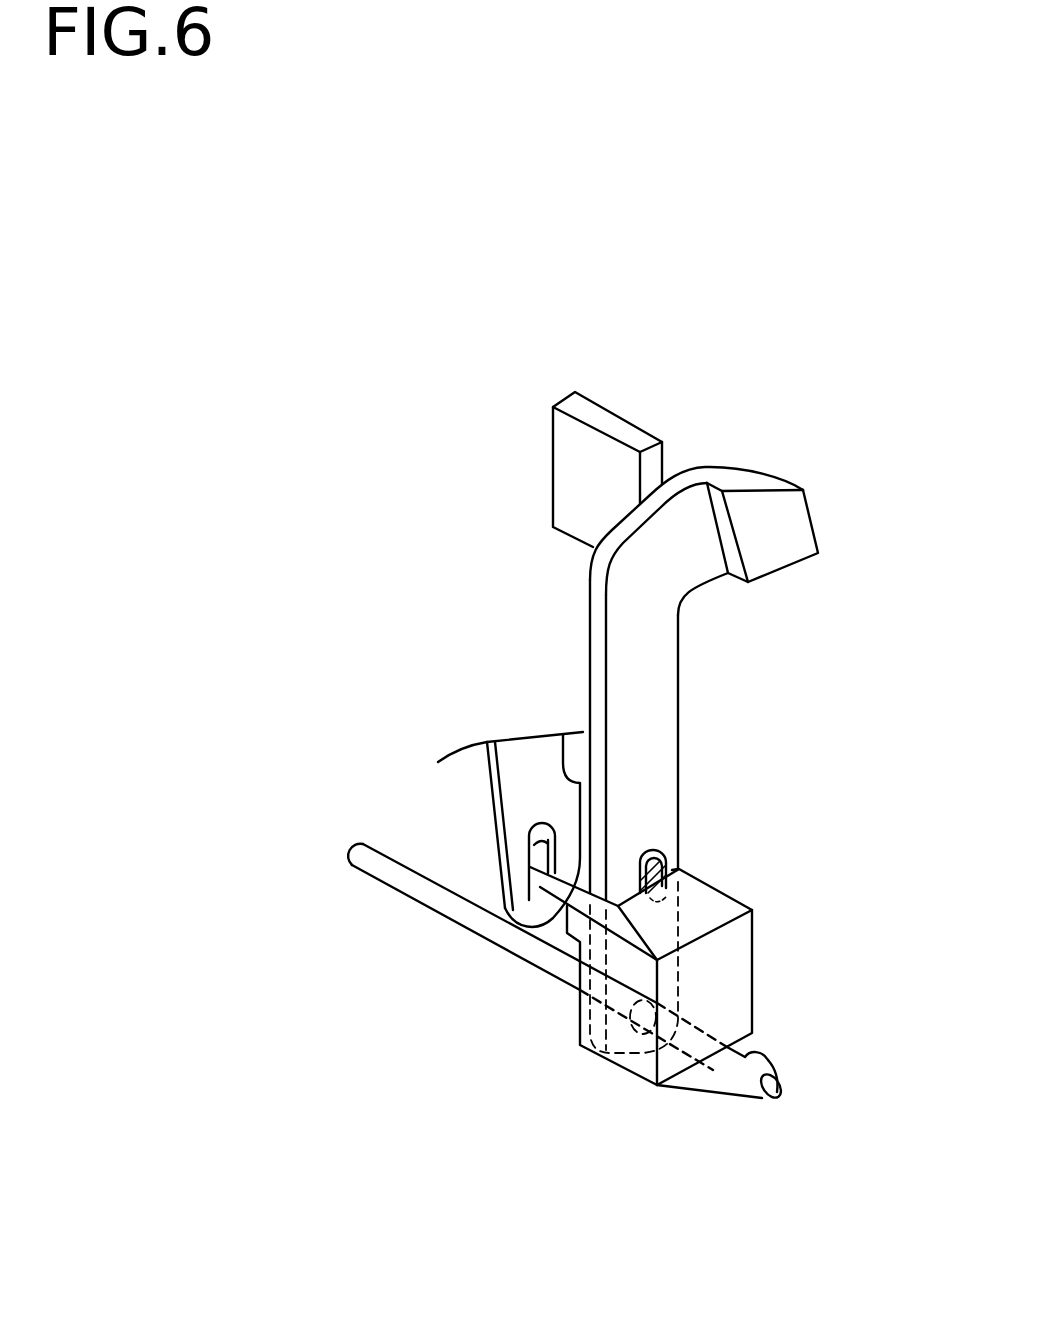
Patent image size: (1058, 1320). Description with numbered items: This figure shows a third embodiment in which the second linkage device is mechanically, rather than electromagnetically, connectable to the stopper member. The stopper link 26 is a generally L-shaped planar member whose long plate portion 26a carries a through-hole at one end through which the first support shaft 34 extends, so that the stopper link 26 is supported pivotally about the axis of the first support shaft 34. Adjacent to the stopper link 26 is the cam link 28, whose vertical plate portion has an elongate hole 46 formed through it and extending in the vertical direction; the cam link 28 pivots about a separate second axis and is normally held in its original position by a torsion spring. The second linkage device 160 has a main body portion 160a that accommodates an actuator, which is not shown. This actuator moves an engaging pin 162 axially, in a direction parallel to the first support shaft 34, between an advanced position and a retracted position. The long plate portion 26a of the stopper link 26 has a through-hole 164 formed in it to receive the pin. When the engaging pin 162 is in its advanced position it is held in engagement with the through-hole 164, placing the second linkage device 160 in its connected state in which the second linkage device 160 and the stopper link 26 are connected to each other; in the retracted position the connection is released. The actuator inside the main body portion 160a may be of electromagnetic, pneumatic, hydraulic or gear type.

The stopper link 26 is at (767, 426).
The long plate portion 26a is at (660, 778).
The cam link 28 is at (517, 780).
The elongate hole 46 is at (538, 835).
The first support shaft 34 is at (525, 950).
The second linkage device 160 is at (715, 1008).
The main body portion 160a is at (735, 985).
The engaging pin 162 is at (678, 863).
The through-hole 164 is at (673, 850).